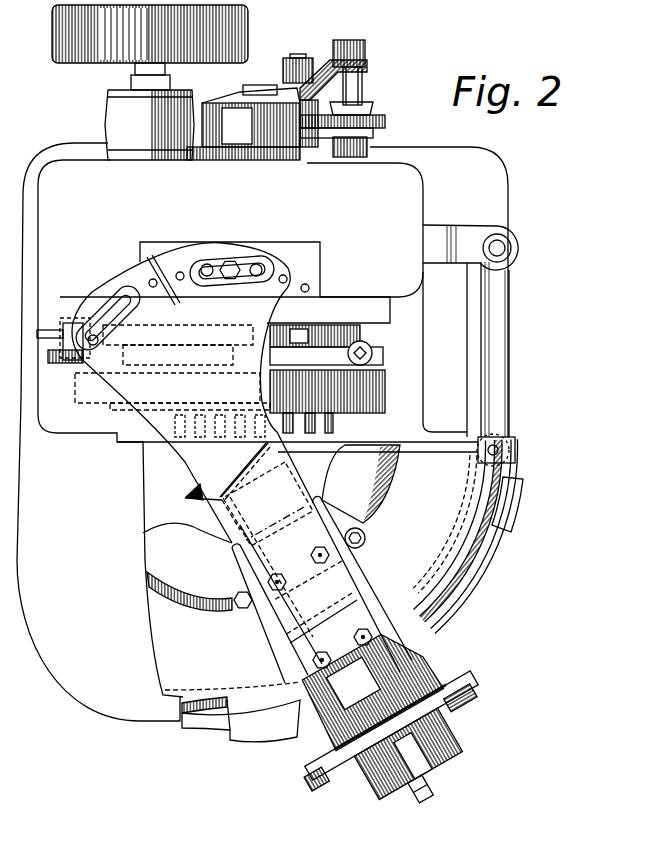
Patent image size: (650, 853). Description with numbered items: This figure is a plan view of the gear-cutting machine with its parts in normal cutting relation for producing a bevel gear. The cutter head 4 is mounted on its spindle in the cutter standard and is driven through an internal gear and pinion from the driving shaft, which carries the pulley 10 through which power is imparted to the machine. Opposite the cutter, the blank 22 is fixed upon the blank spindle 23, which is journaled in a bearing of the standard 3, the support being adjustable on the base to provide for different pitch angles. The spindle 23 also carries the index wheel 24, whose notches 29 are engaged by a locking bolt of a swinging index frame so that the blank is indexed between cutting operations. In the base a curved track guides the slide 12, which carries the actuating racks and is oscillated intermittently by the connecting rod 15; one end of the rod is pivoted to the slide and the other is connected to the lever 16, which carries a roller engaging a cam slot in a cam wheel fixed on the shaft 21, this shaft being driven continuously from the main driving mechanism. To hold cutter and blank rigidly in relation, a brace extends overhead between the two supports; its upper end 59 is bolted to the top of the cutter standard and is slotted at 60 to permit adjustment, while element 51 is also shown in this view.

The pulley 10 is at (150, 82).
The upper end of brace 59 is at (218, 250).
The slot 60 is at (126, 296).
The lever 16 is at (470, 240).
The connecting rod 15 is at (497, 375).
The cutter head 4 is at (366, 385).
The blank 22 is at (188, 494).
The slide end 51 is at (232, 497).
The slide 12 is at (272, 715).
The standard 3 is at (296, 642).
The index wheel 24 is at (391, 725).
The notches 29 is at (460, 698).
The blank spindle 23 is at (390, 725).
The shaft 21 is at (362, 704).